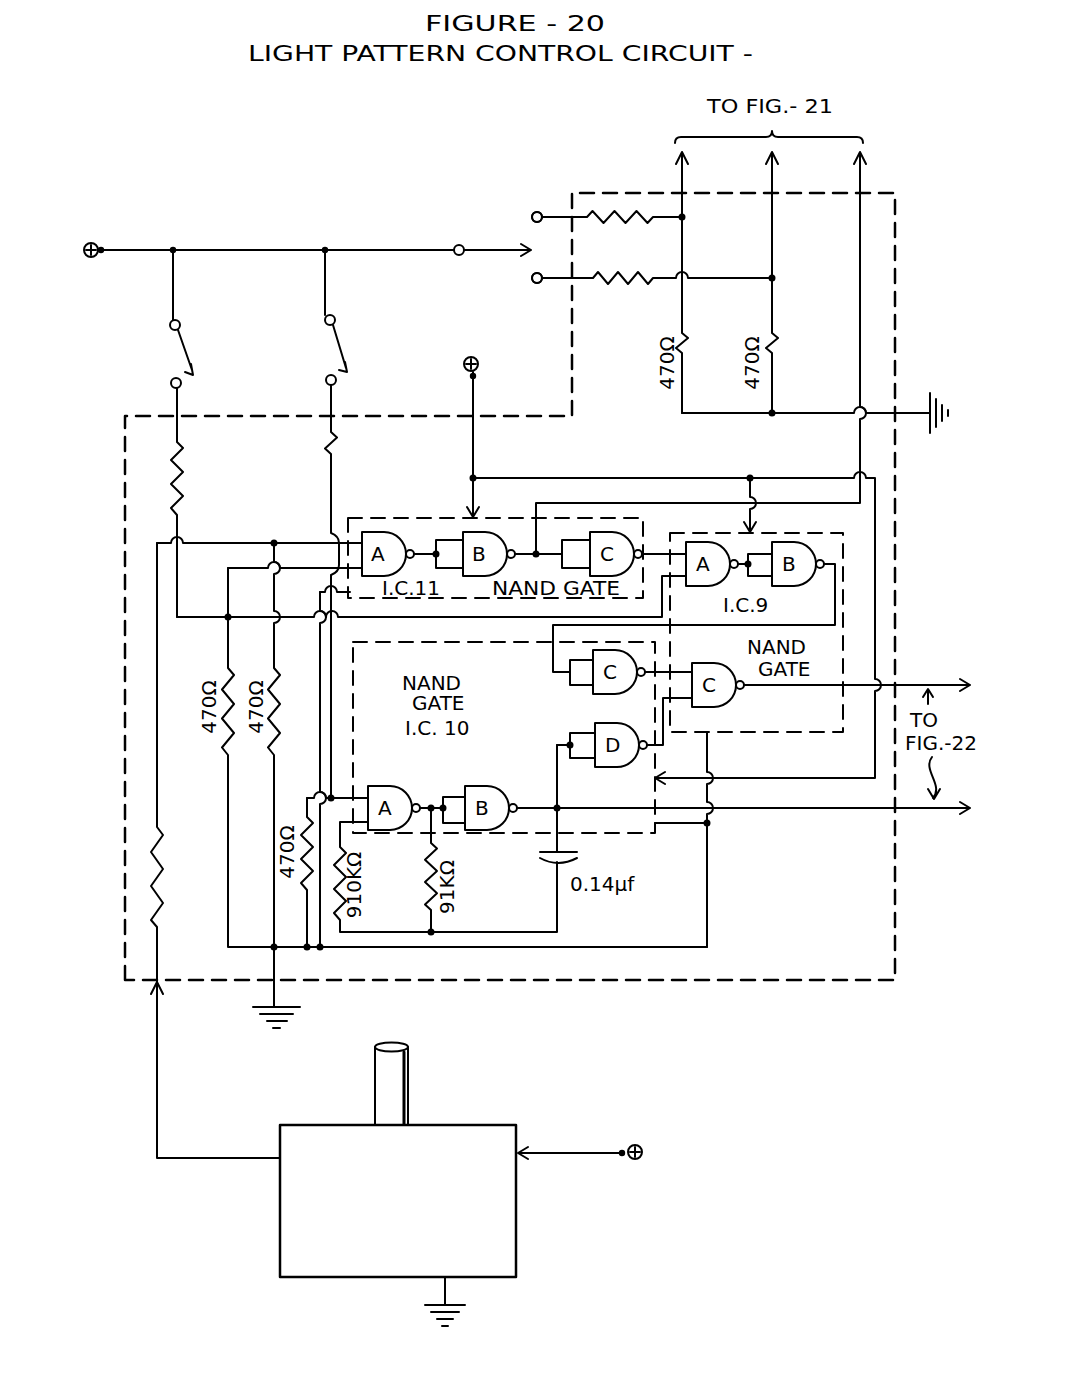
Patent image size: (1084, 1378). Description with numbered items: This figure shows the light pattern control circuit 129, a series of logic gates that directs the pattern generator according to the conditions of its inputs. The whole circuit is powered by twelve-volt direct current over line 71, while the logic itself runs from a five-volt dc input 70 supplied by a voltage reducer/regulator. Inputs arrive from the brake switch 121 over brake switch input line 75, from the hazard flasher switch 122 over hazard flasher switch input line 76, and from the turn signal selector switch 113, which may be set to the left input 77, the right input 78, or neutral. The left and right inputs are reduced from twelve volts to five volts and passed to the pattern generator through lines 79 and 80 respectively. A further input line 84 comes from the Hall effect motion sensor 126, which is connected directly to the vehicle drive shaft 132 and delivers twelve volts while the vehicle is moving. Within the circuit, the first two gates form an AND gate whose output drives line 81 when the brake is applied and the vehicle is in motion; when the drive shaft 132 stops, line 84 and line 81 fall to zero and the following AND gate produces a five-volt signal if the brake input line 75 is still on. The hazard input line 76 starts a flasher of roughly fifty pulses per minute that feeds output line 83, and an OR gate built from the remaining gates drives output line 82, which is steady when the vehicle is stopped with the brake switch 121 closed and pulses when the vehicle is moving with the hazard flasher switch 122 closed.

The light pattern control circuit 129 is at (510, 510).
The twelve-volt direct current line 71 is at (141, 250).
The turn signal selector switch 113 is at (584, 220).
The left input 77 is at (542, 214).
The right input 78 is at (542, 282).
The left output line 79 is at (682, 172).
The right output line 80 is at (772, 174).
The output line 81 is at (860, 172).
The brake switch 121 is at (183, 318).
The hazard flasher switch 122 is at (324, 316).
The brake switch input line 75 is at (180, 404).
The hazard flasher switch input line 76 is at (331, 404).
The five-volt dc input 70 is at (473, 410).
The output line 82 is at (930, 686).
The output line 83 is at (940, 808).
The motion sensor input line 84 is at (160, 1060).
The Hall effect motion sensor 126 is at (398, 1225).
The vehicle drive shaft 132 is at (424, 1099).